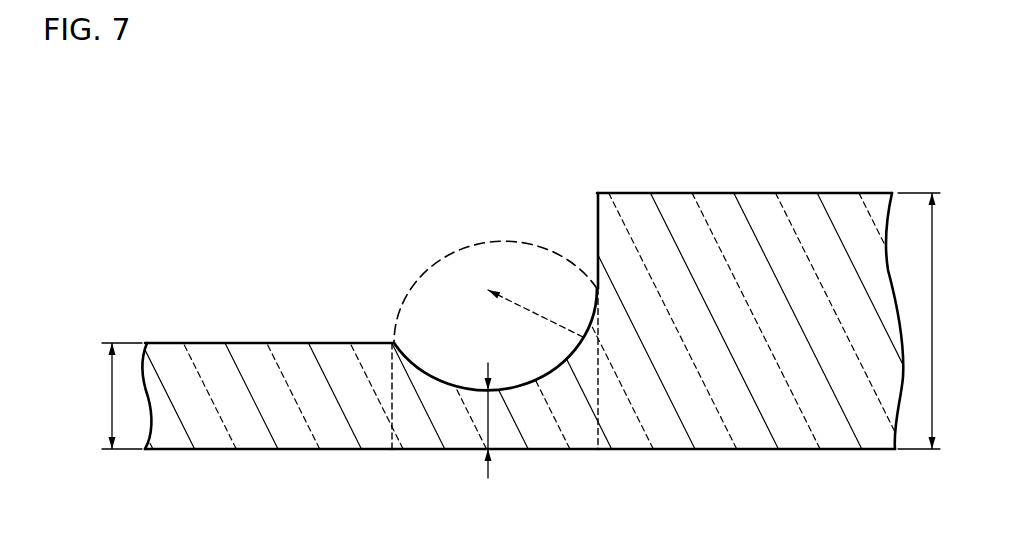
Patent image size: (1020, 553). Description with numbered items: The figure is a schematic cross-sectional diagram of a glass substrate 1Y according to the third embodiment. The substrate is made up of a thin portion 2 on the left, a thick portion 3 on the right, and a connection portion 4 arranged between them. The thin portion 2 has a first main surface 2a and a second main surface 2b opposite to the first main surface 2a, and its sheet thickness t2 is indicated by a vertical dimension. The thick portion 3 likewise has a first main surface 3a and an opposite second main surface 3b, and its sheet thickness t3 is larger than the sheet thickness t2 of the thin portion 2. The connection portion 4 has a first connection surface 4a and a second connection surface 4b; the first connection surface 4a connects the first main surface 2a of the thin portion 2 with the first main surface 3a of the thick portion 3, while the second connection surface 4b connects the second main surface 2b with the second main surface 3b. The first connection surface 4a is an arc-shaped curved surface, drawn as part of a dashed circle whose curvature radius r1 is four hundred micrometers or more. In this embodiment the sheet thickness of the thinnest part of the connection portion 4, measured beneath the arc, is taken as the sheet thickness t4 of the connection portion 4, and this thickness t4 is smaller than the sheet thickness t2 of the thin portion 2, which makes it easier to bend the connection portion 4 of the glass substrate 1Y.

The glass substrate 1Y is at (870, 167).
The thin portion 2 is at (268, 423).
The first main surface 2a is at (225, 343).
The second main surface 2b is at (238, 450).
The thick portion 3 is at (750, 346).
The first main surface 3a is at (785, 193).
The second main surface 3b is at (812, 449).
The connection portion 4 is at (491, 379).
The first connection surface 4a is at (438, 376).
The second connection surface 4b is at (455, 450).
The sheet thickness of the thin portion t2 is at (113, 396).
The sheet thickness of the thick portion t3 is at (931, 321).
The sheet thickness of the connection portion t4 is at (488, 423).
The curvature radius r1 is at (585, 338).